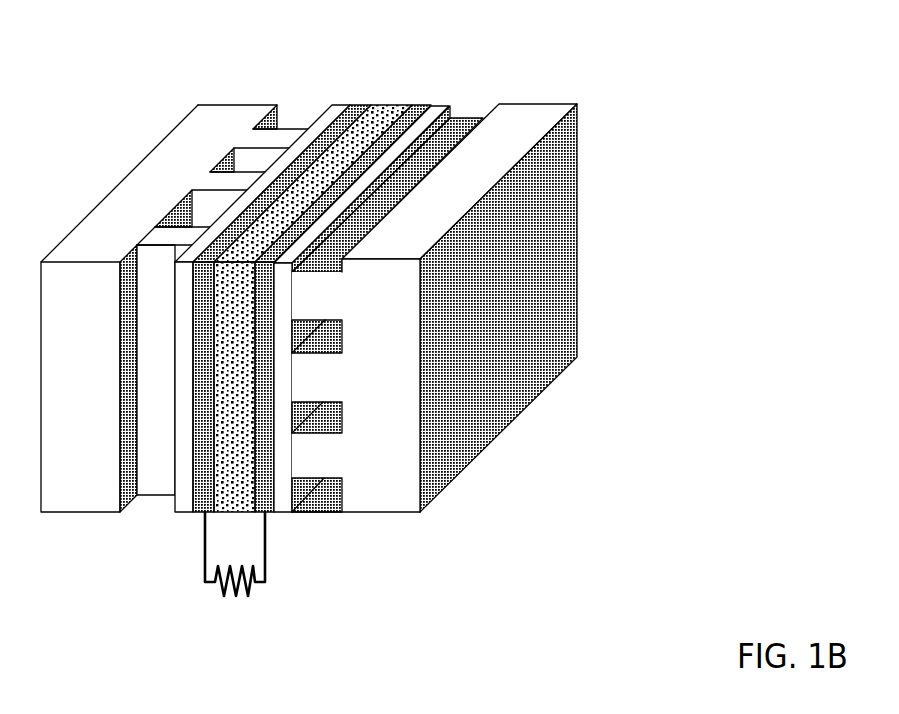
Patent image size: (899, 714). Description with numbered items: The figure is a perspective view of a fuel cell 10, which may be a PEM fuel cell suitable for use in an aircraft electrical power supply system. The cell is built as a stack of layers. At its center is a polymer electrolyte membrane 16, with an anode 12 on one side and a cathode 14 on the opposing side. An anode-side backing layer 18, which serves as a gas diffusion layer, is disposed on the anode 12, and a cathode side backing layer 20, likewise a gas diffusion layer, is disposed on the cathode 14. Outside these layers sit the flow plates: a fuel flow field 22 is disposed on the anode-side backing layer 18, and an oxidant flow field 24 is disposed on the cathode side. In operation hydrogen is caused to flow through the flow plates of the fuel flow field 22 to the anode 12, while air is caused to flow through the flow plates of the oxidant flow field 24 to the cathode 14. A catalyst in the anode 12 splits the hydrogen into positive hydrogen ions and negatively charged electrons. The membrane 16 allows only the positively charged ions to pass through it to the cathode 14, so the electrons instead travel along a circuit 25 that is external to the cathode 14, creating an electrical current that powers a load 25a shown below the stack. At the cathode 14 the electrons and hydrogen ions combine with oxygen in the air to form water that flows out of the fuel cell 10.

The fuel cell 10 is at (395, 342).
The anode 12 is at (360, 102).
The cathode 14 is at (420, 102).
The polymer electrolyte membrane 16 is at (387, 102).
The anode-side backing layer 18 is at (323, 116).
The cathode side backing layer 20 is at (443, 105).
The fuel flow field 22 is at (212, 115).
The oxidant flow field 24 is at (557, 115).
The circuit 25 is at (263, 587).
The load 25a is at (233, 598).